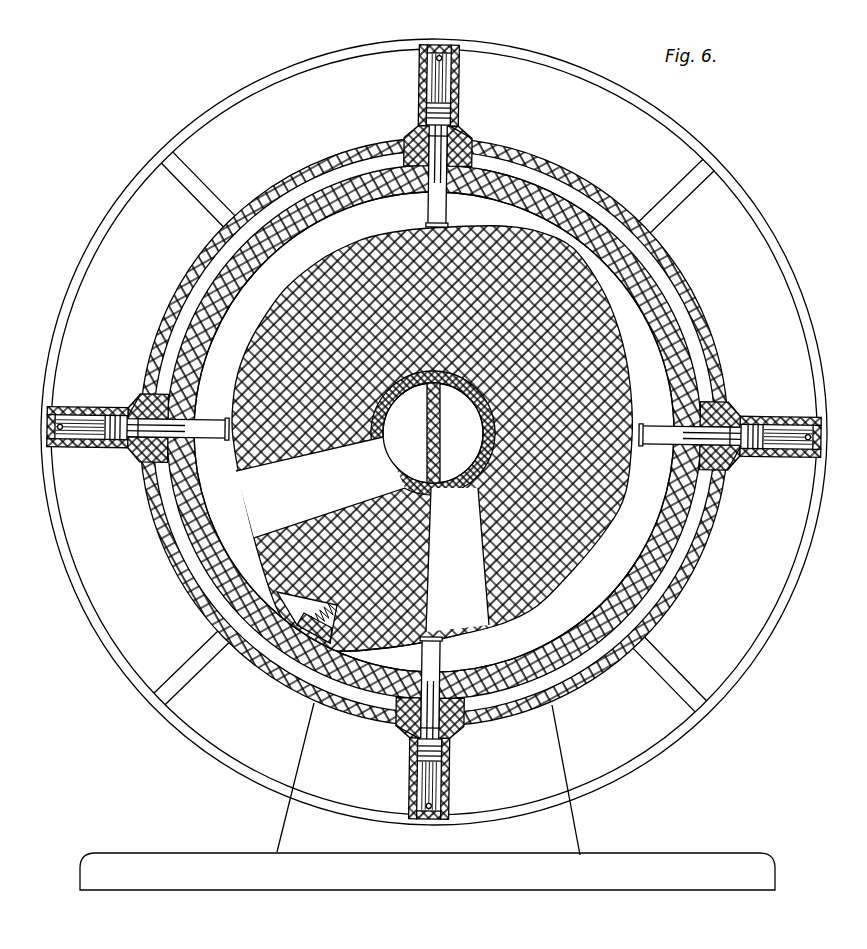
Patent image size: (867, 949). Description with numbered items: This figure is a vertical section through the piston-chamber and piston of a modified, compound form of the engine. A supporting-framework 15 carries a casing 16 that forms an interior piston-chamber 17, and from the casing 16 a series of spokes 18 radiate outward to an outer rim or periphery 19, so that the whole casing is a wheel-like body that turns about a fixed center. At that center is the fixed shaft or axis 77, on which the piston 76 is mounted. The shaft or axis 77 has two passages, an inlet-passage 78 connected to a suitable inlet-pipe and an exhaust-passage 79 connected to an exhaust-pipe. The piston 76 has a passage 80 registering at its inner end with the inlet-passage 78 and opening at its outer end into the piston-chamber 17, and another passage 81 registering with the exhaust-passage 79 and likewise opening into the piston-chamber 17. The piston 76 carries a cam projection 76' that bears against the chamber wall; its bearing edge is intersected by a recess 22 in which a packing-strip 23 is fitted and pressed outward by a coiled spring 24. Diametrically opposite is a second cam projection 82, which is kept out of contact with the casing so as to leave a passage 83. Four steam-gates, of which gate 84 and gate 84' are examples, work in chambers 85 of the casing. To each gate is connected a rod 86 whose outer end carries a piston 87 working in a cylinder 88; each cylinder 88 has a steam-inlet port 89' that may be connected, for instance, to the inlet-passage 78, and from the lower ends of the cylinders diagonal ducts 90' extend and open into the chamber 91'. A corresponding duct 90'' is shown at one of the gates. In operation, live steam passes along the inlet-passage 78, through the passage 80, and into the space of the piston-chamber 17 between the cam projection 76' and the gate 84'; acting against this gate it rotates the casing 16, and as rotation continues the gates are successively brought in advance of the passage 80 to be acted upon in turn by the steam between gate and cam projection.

The supporting-framework 15 is at (574, 808).
The casing 16 is at (161, 240).
The piston-chamber 17 is at (434, 432).
The spokes 18 is at (434, 432).
The outer rim or periphery 19 is at (316, 232).
The recess 22 is at (292, 601).
The packing-strip 23 is at (325, 645).
The coiled spring 24 is at (300, 622).
The piston 76 is at (596, 582).
The cam projection 76' is at (381, 653).
The fixed shaft or axis 77 is at (488, 457).
The inlet-passage 78 is at (433, 433).
The exhaust-passage 79 is at (450, 433).
The passage 80 is at (320, 487).
The passage 81 is at (457, 560).
The cam projection 82 is at (592, 292).
The passage 83 is at (535, 199).
The steam-gate 84 is at (448, 682).
The steam-gate 84' is at (183, 442).
The chambers 85 is at (428, 433).
The rod 86 is at (434, 432).
The piston 87 is at (422, 431).
The cylinder 88 is at (434, 432).
The steam-inlet port 89' is at (437, 430).
The diagonal duct 90' is at (313, 426).
The passage 90'' is at (748, 478).
The chamber 91' is at (434, 432).